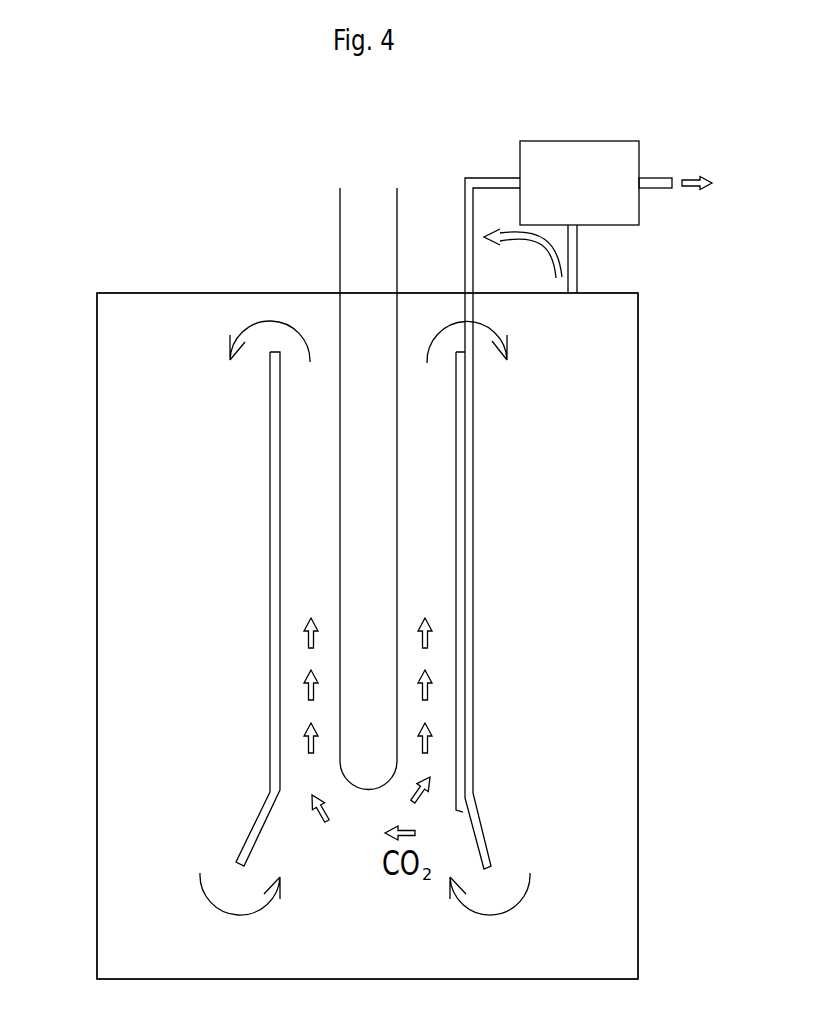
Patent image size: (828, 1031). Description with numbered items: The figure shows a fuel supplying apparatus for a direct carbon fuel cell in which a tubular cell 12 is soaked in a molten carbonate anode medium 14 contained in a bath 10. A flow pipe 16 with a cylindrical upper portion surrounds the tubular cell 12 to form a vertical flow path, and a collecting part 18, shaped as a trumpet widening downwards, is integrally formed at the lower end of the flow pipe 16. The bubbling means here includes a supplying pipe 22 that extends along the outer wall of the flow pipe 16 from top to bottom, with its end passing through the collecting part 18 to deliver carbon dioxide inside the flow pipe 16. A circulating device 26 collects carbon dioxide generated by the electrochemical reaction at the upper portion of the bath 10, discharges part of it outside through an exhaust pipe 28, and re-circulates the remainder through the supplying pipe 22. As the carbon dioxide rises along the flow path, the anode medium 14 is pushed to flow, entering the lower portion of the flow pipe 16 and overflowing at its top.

The bath 10 is at (148, 293).
The tubular cell 12 is at (340, 204).
The anode medium 14 is at (196, 323).
The flow pipe 16 is at (274, 590).
The collecting part 18 is at (252, 832).
The supplying pipe 22 is at (473, 262).
The circulating device 26 is at (520, 160).
The exhaust pipe 28 is at (577, 262).